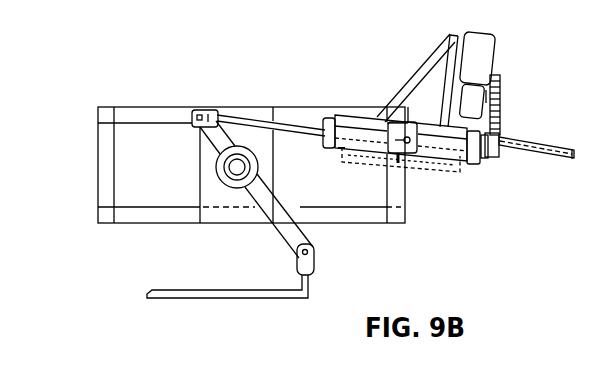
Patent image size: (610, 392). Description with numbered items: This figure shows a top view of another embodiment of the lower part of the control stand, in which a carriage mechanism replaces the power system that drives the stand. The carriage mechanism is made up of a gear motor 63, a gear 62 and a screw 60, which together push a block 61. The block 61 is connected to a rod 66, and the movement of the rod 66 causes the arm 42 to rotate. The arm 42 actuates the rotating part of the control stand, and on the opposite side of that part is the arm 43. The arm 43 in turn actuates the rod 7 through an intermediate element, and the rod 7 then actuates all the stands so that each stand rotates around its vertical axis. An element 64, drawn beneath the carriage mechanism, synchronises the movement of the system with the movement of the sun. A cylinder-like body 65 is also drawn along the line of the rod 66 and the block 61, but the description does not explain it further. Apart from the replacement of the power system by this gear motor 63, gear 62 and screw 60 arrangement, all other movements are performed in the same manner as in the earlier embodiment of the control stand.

The rod 7 is at (177, 290).
The arm 42 is at (197, 112).
The arm 43 is at (302, 232).
The screw 60 is at (558, 163).
The block 61 is at (384, 125).
The gear 62 is at (502, 100).
The gear motor 63 is at (492, 52).
The synchronising element 64 is at (438, 172).
The cylinder 65 is at (347, 118).
The rod 66 is at (252, 118).